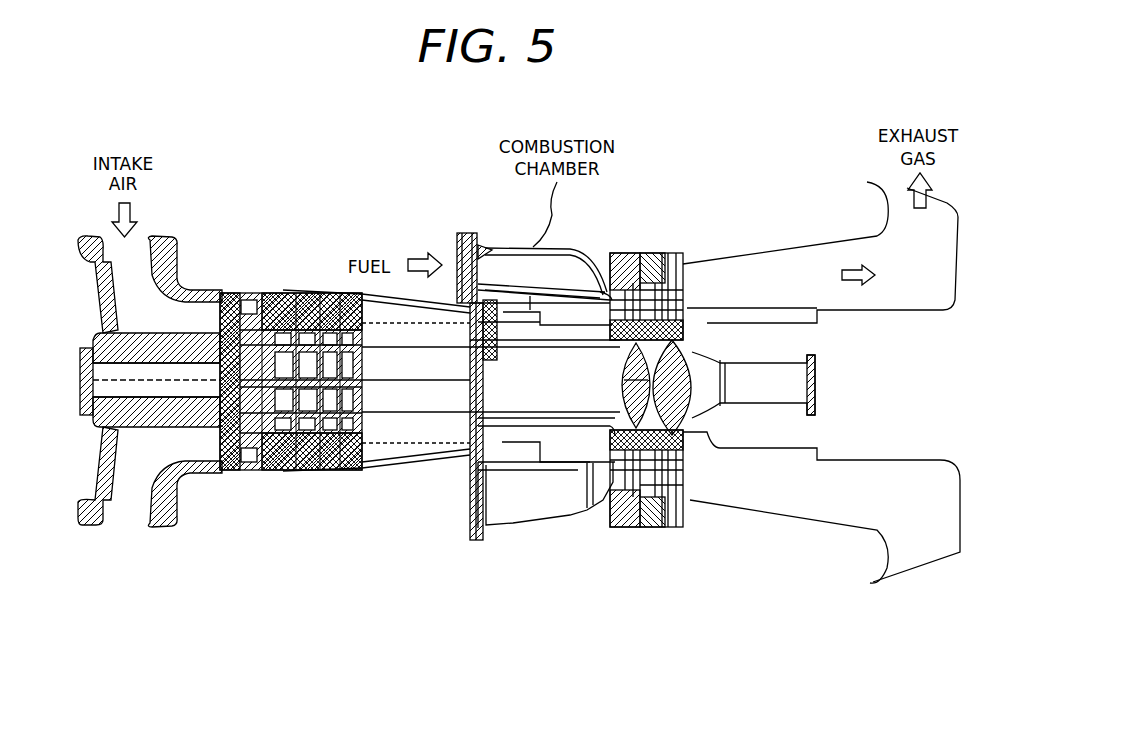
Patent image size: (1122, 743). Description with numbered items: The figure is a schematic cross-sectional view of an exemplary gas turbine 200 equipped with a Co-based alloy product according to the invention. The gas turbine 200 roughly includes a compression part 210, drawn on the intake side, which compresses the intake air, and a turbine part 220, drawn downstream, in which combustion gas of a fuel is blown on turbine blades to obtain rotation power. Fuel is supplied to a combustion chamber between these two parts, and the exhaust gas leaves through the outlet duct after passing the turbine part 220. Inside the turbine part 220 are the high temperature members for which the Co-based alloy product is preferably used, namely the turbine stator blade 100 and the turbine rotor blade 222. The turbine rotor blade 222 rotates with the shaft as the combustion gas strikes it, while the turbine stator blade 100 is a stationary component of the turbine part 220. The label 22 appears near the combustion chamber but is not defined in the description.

The gas turbine engine 200 is at (297, 203).
The compressor section 210 is at (90, 597).
The turbine section 220 is at (470, 597).
The turbine nozzle 100 is at (650, 253).
The turbine rotor 222 is at (670, 287).
The fuel nozzle 22 is at (610, 297).